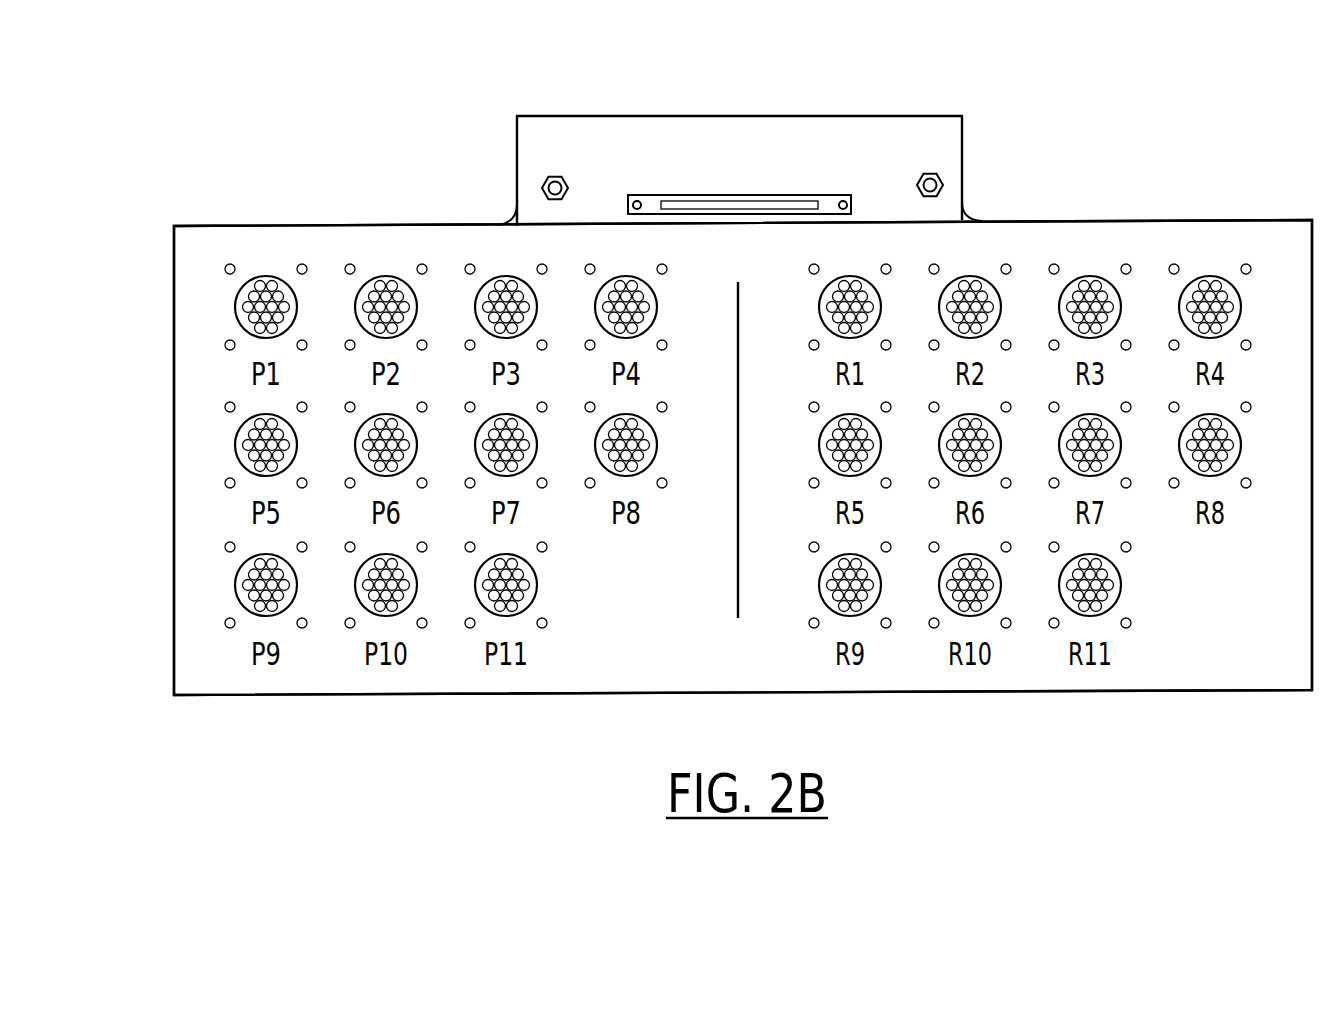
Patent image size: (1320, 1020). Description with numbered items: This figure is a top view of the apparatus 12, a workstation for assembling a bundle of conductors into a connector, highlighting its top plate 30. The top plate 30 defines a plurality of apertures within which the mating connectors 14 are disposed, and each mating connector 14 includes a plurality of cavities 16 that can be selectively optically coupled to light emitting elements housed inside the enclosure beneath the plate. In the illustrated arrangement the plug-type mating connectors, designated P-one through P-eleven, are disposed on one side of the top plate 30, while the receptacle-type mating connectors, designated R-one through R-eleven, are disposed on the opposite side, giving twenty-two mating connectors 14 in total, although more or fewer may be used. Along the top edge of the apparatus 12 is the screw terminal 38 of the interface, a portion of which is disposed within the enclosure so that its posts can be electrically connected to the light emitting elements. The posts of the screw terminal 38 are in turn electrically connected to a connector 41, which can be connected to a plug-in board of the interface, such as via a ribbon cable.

The apparatus 12 is at (1198, 156).
The mating connector 14 is at (189, 209).
The cavity 16 is at (270, 292).
The top plate 30 is at (333, 672).
The screw terminal 38 is at (962, 168).
The connector 41 is at (652, 197).